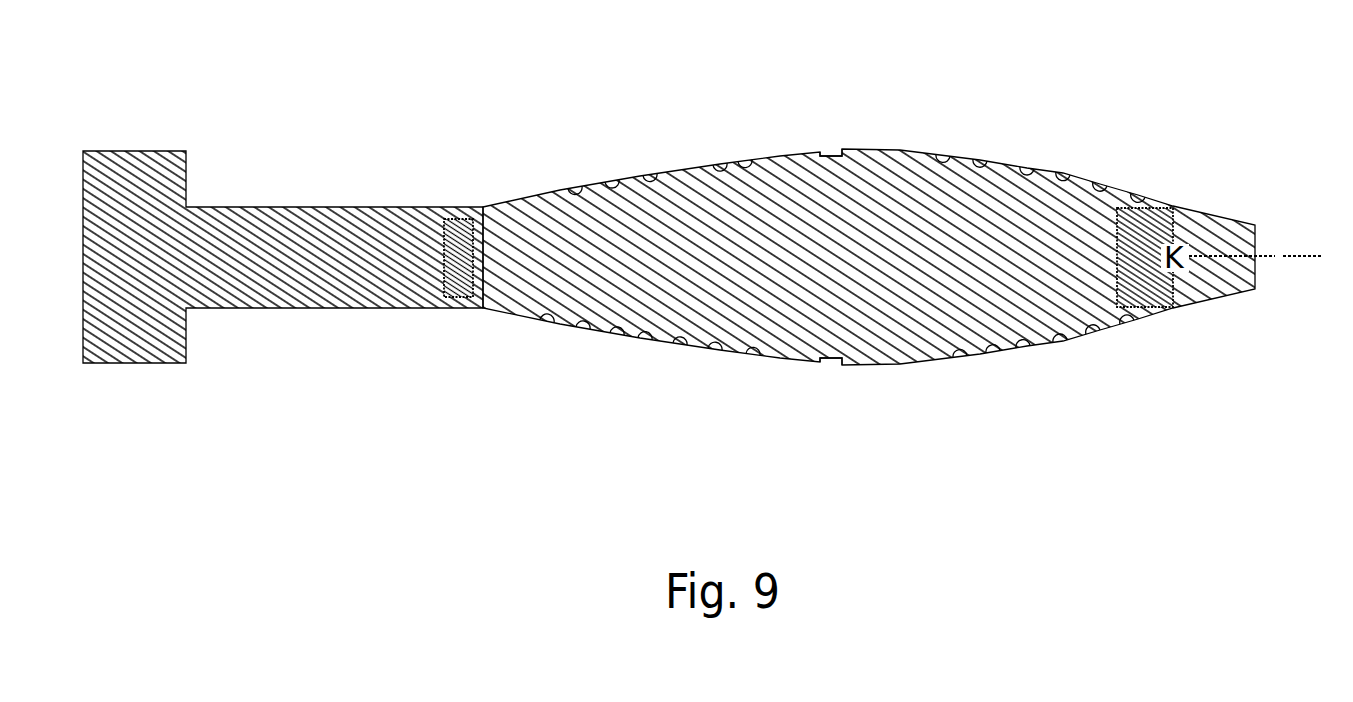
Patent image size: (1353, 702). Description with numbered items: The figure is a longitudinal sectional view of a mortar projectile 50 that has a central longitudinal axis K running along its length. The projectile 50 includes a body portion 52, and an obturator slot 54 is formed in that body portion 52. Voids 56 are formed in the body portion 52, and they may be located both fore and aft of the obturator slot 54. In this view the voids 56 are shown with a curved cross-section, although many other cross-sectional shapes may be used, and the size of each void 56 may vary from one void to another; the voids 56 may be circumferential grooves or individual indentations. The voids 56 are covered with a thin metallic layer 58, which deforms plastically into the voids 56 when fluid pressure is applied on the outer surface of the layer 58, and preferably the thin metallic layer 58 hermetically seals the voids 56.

The mortar projectile 50 is at (656, 122).
The body portion 52 is at (893, 297).
The obturator slot 54 is at (828, 362).
The voids 56 is at (583, 188).
The thin metallic layer 58 is at (955, 151).